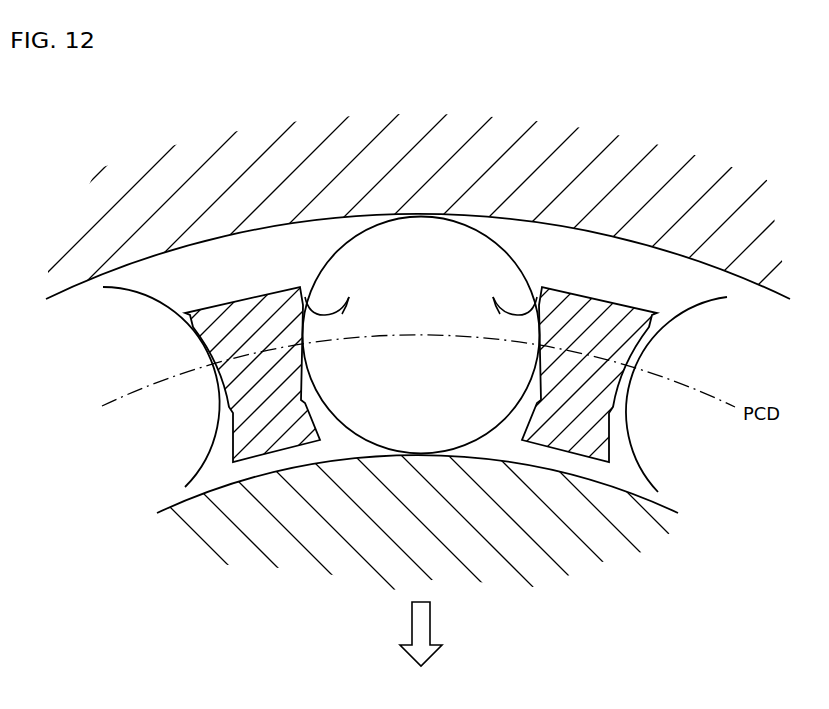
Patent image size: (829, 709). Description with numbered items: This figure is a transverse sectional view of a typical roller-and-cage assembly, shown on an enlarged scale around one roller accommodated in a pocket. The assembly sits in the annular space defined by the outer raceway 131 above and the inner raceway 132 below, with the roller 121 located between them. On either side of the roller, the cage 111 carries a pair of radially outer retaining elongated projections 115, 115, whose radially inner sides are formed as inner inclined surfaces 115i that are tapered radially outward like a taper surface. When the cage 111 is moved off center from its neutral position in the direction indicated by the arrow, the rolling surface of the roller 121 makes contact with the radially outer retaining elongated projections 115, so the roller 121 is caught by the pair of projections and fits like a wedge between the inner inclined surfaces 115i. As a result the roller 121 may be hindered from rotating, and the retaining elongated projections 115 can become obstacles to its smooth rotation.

The cage 111 is at (247, 295).
The radially outer retaining elongated projection 115 is at (332, 308).
The inner inclined surface 115i is at (349, 297).
The roller 121 is at (428, 235).
The outer raceway 131 is at (592, 233).
The inner raceway 132 is at (624, 489).